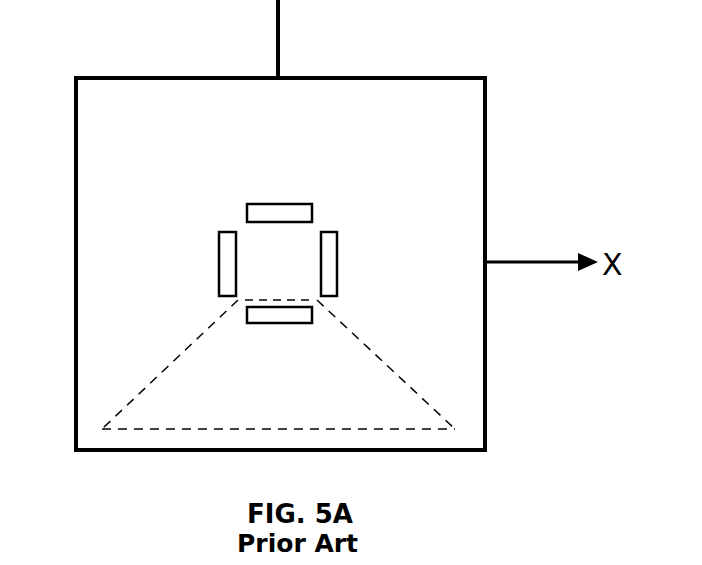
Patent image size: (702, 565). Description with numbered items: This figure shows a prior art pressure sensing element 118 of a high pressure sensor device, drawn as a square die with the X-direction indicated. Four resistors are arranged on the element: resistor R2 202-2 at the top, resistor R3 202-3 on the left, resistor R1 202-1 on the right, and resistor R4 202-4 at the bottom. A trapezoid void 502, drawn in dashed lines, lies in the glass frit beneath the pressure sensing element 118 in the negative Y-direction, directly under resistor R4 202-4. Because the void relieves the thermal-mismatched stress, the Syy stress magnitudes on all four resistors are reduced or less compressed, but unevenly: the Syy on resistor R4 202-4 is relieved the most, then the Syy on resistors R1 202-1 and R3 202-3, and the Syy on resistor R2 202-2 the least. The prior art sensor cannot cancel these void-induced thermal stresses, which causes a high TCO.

The pressure sensing element 118 is at (434, 127).
The resistor R1 202-1 is at (337, 270).
The resistor R2 202-2 is at (300, 204).
The resistor R3 202-3 is at (219, 259).
The resistor R4 202-4 is at (263, 323).
The trapezoid void 502 is at (372, 369).